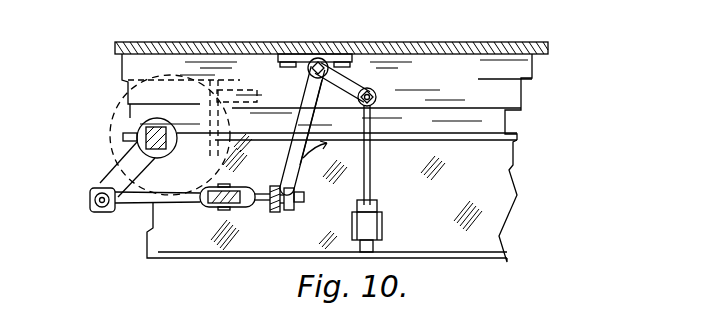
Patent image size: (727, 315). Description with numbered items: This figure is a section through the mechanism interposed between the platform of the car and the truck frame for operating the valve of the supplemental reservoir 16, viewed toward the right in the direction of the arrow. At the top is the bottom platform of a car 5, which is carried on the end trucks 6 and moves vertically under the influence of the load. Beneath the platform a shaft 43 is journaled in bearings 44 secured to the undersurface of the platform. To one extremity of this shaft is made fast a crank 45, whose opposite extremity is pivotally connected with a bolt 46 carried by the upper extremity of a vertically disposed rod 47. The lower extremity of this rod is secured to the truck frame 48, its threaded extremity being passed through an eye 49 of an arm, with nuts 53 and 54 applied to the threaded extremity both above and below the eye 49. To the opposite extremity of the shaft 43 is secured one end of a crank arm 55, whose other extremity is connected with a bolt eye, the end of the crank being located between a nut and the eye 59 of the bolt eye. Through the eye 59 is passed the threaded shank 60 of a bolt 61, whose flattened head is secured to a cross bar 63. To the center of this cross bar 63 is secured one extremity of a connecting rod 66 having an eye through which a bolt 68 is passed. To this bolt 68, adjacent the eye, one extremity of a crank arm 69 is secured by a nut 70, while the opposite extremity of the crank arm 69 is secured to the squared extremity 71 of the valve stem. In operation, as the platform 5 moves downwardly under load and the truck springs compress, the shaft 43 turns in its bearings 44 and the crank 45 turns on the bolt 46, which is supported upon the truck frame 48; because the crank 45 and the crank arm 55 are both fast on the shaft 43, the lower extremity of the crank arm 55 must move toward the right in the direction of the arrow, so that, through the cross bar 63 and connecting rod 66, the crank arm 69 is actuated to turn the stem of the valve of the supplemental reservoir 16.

The bottom platform of a car 5 is at (197, 42).
The end trucks 6 is at (335, 152).
The supplemental reservoir 16 is at (103, 147).
The shaft 43 is at (314, 59).
The bearings 44 is at (288, 60).
The crank 45 is at (346, 82).
The bolt 46 is at (374, 90).
The vertically disposed rod 47 is at (371, 158).
The truck frame 48 is at (513, 163).
The eye 49 is at (382, 216).
The nut 53 is at (357, 204).
The nut 54 is at (356, 237).
The crank arm 55 is at (283, 157).
The eye 59 is at (273, 213).
The threaded shank 60 is at (312, 181).
The bolt 61 is at (276, 189).
The cross bar 63 is at (220, 208).
The connecting rod 66 is at (150, 204).
The bolt 68 is at (100, 208).
The crank arm 69 is at (126, 166).
The nut 70 is at (90, 201).
The squared extremity of the valve stem 71 is at (130, 142).